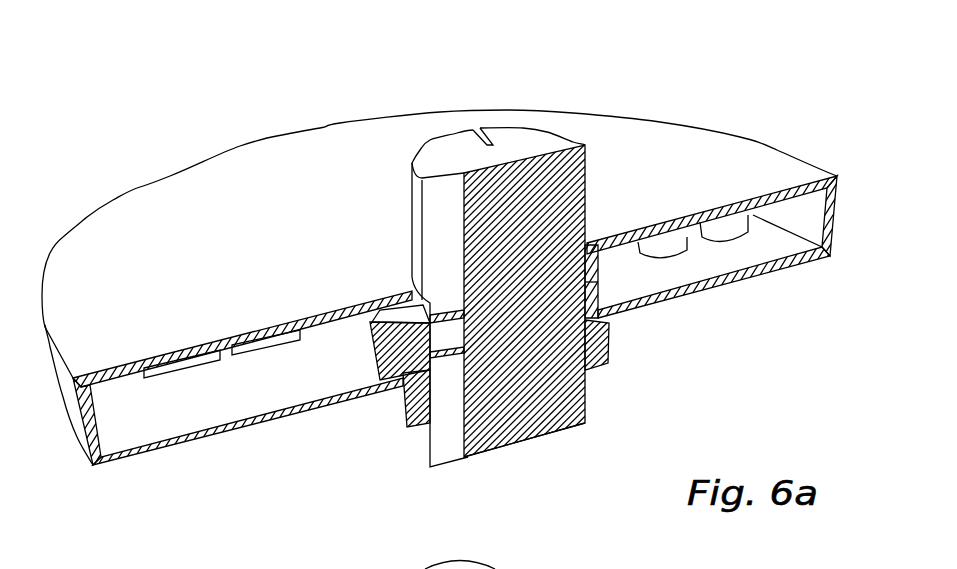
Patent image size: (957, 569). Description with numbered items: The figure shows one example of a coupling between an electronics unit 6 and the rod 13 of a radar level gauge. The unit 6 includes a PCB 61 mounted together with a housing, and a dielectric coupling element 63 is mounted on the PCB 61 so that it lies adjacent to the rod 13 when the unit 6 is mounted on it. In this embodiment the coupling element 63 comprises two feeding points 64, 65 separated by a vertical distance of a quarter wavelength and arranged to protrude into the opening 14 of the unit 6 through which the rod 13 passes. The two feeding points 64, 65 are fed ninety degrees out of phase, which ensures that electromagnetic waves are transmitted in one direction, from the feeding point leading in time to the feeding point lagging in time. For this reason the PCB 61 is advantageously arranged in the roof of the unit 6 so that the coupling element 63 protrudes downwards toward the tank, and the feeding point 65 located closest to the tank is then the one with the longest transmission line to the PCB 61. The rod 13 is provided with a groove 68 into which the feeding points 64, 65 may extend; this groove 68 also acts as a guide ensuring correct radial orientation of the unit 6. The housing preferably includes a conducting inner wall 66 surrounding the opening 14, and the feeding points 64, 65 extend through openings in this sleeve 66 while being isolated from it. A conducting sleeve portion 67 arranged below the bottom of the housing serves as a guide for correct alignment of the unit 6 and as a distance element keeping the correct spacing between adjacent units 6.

The unit 6 is at (697, 157).
The rod 13 is at (553, 153).
The opening 14 is at (548, 393).
The PCB 61 is at (312, 327).
The coupling element 63 is at (380, 355).
The feeding point 64 is at (430, 303).
The feeding point 65 is at (445, 350).
The conducting inner wall 66 is at (623, 277).
The conducting sleeve portion 67 is at (609, 348).
The groove 68 is at (435, 203).